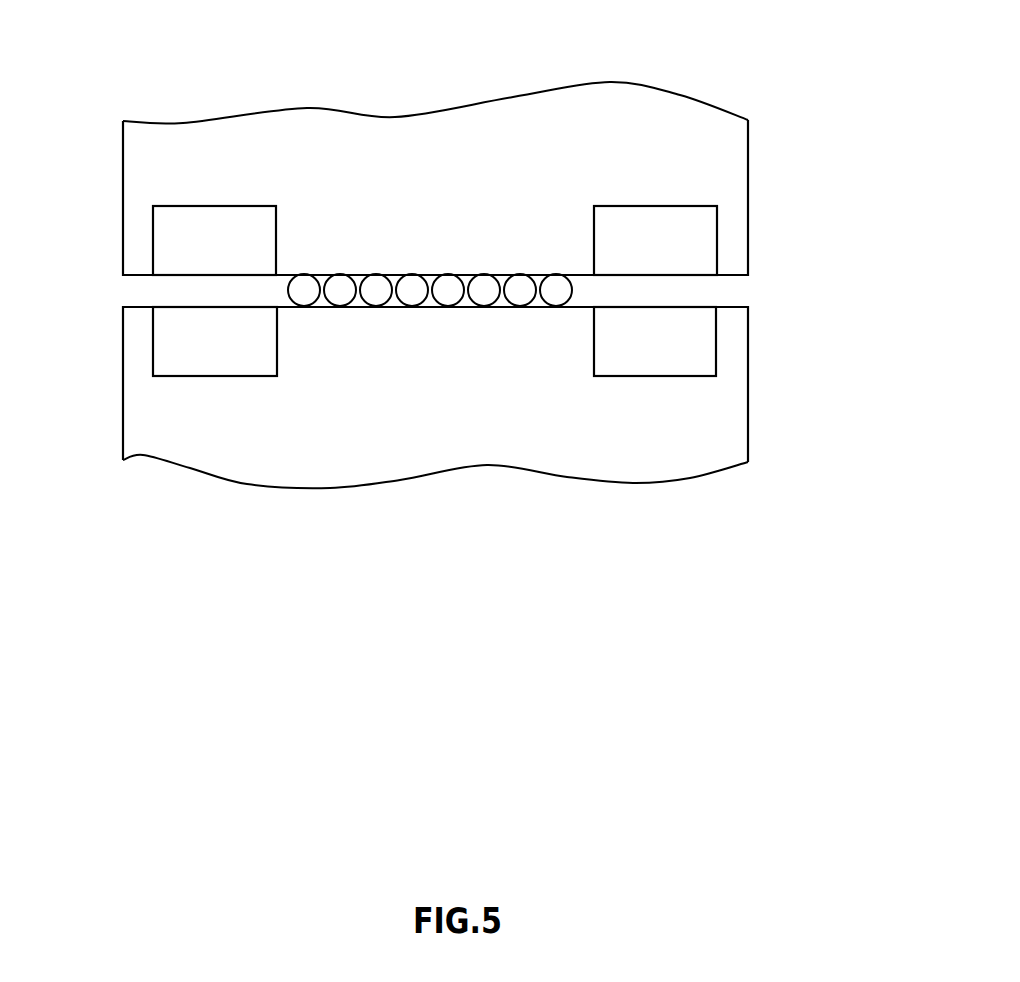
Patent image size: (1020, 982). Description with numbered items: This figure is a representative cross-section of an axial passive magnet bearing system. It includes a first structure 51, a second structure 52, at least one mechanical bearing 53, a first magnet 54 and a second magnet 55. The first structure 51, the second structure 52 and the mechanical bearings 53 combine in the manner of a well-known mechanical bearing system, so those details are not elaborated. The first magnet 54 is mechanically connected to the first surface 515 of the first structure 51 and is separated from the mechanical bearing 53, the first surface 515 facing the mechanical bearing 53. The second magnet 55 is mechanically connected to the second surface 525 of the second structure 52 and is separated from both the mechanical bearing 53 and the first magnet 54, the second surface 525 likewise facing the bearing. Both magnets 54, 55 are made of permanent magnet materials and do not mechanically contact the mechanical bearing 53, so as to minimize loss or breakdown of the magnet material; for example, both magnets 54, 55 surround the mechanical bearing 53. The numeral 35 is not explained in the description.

The first structure 51 is at (500, 160).
The first surface 515 is at (435, 85).
The second structure 52 is at (492, 428).
The second surface 525 is at (578, 307).
The mechanical bearing 53 is at (297, 275).
The first magnet 54 is at (215, 240).
The second magnet 55 is at (716, 325).
The conductive pad 35 is at (195, 342).